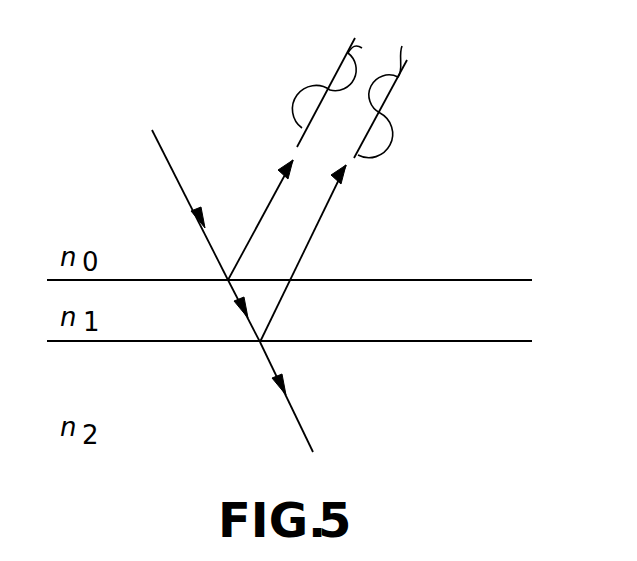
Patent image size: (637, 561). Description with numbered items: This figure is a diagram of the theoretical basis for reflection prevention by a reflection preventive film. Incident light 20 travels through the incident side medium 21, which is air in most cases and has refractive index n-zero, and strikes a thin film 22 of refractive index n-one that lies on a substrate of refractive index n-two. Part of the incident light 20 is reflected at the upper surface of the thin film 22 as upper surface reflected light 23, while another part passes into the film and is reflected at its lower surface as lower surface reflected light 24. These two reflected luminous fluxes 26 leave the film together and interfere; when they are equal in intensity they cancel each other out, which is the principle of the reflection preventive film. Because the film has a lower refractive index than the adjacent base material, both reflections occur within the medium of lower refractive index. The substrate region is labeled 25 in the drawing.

The incident light 20 is at (165, 160).
The incident side medium 21 is at (289, 263).
The thin film 22 is at (289, 323).
The upper surface reflected light 23 is at (262, 215).
The lower surface reflected light 24 is at (310, 245).
The substrate medium n2 25 is at (382, 397).
The reflected luminous fluxes 26 is at (362, 48).